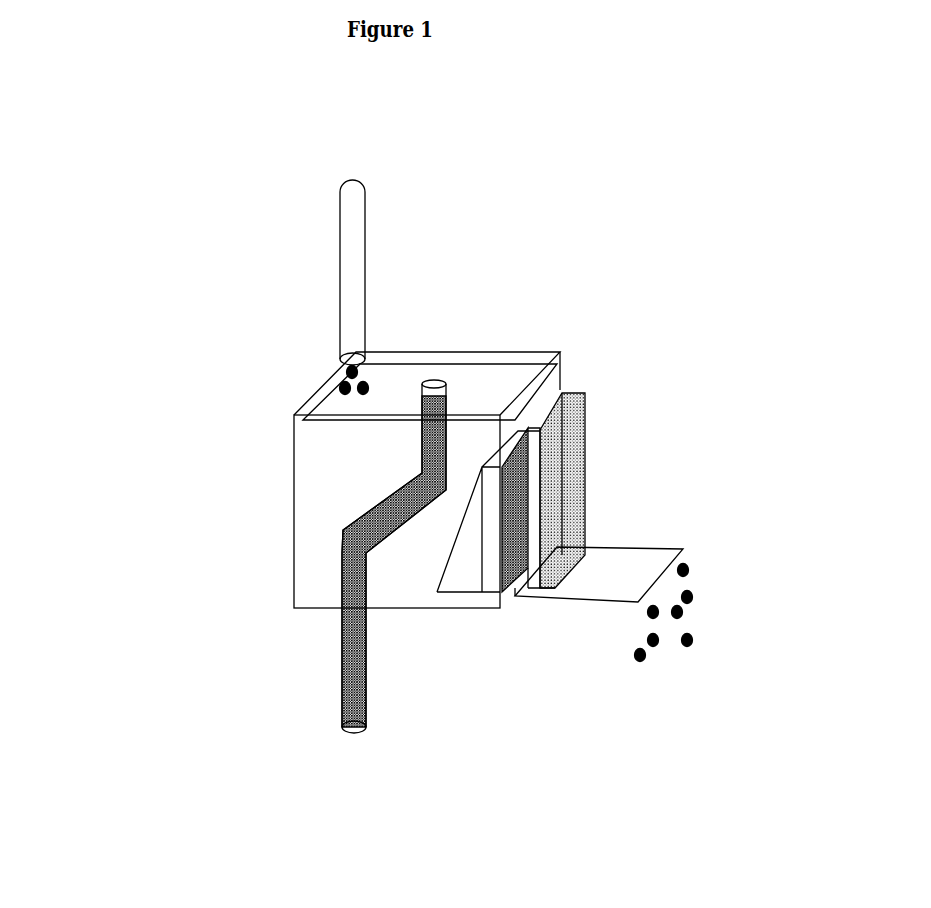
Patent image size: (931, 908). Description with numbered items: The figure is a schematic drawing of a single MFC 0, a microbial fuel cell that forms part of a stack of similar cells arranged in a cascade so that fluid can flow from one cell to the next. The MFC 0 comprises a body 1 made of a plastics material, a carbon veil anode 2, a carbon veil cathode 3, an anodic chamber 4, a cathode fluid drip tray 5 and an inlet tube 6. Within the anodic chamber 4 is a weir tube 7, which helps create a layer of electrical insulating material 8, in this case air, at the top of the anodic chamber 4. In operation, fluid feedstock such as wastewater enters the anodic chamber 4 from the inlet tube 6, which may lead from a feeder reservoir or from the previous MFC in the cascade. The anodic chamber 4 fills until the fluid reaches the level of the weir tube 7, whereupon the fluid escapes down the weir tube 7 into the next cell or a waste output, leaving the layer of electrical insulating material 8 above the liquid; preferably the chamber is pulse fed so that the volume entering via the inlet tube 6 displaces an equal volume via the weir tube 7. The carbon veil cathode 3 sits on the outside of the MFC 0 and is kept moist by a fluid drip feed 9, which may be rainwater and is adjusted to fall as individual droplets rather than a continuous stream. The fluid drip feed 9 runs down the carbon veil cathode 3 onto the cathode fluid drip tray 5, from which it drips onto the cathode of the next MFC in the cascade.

The MFC 0 is at (165, 227).
The body 1 is at (294, 528).
The carbon veil anode 2 is at (492, 535).
The carbon veil cathode 3 is at (575, 390).
The anodic chamber 4 is at (313, 570).
The cathode fluid drip tray 5 is at (622, 545).
The inlet tube 6 is at (340, 265).
The weir tube 7 is at (422, 452).
The layer of electrical insulating material 8 is at (495, 352).
The fluid drip feed 9 is at (692, 582).